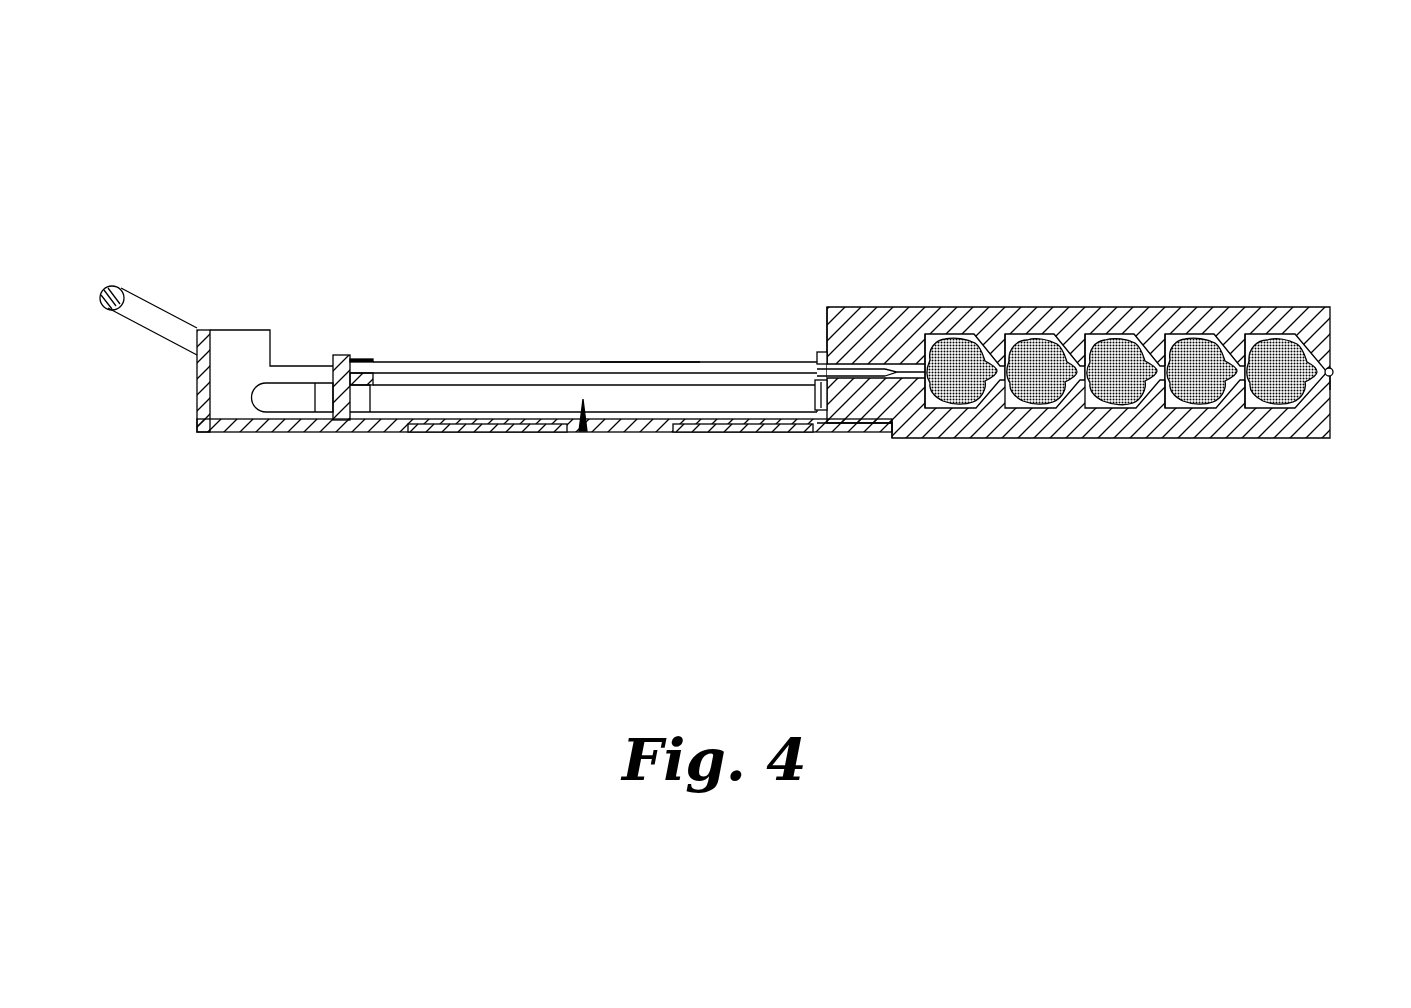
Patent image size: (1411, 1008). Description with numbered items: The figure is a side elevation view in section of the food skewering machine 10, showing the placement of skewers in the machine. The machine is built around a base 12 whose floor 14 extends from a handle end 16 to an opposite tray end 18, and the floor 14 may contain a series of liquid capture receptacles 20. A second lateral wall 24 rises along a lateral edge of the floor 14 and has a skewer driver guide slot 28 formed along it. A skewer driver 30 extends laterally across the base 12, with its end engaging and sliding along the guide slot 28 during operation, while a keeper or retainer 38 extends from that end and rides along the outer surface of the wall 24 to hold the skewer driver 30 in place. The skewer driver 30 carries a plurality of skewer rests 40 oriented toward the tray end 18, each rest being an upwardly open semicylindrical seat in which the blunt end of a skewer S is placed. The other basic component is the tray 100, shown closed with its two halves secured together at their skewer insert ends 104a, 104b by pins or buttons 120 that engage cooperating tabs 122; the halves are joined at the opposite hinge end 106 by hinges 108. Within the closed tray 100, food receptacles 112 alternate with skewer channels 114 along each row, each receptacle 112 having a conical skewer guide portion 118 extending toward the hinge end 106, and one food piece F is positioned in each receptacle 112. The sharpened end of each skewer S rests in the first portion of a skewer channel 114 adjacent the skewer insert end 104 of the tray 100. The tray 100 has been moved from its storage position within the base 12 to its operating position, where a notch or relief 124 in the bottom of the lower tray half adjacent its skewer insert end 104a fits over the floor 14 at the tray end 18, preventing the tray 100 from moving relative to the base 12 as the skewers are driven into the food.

The food skewering machine 10 is at (1026, 590).
The base 12 is at (494, 288).
The floor 14 is at (605, 432).
The handle end 16 is at (197, 401).
The tray end 18 is at (893, 436).
The liquid capture receptacles 20 is at (480, 432).
The second lateral wall 24 is at (254, 361).
The skewer driver guide slot 28 is at (577, 435).
The skewer driver 30 is at (345, 355).
The second keeper or retainer 38 is at (310, 405).
The skewer rests 40 is at (366, 385).
The tray 100 is at (1041, 168).
The skewer insert end 104 is at (827, 308).
The skewer insert end of first tray half 104a is at (812, 432).
The skewer insert end of second tray half 104b is at (827, 328).
The hinge end 106 is at (1333, 370).
The hinges 108 is at (1333, 378).
The food receptacles 112 is at (1050, 337).
The skewer channels 114 is at (925, 345).
The conical skewer guide portion 118 is at (1243, 337).
The pins or buttons 120 is at (815, 395).
The tabs 122 is at (817, 356).
The notch or relief 124 is at (858, 434).
The skewer S is at (635, 362).
The food piece or element F is at (1120, 402).